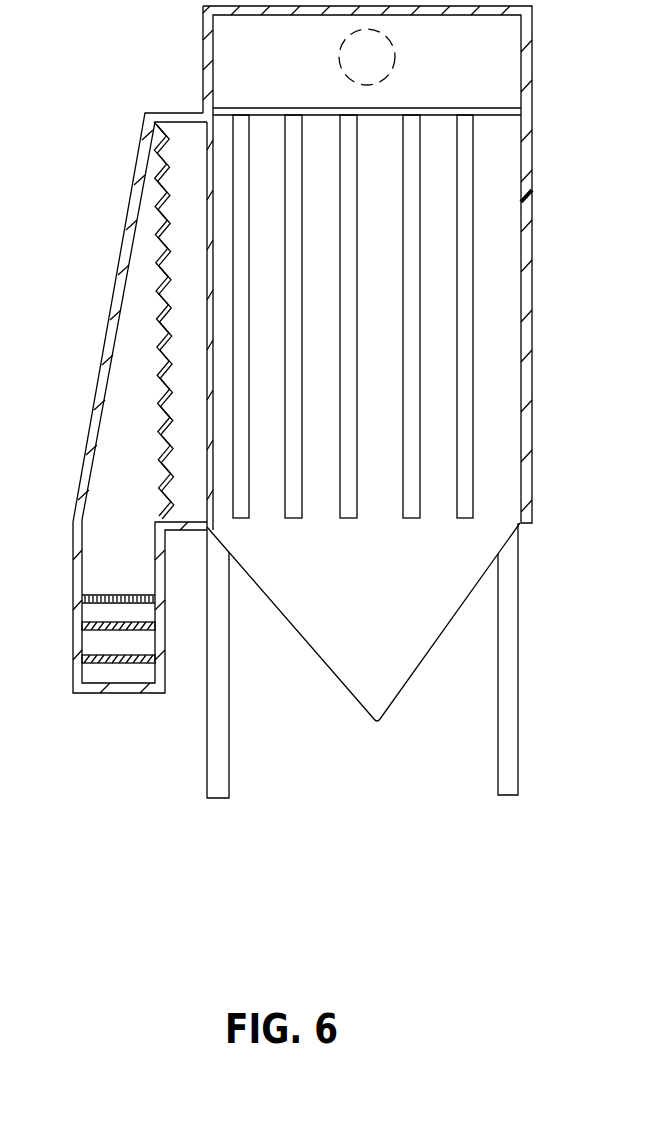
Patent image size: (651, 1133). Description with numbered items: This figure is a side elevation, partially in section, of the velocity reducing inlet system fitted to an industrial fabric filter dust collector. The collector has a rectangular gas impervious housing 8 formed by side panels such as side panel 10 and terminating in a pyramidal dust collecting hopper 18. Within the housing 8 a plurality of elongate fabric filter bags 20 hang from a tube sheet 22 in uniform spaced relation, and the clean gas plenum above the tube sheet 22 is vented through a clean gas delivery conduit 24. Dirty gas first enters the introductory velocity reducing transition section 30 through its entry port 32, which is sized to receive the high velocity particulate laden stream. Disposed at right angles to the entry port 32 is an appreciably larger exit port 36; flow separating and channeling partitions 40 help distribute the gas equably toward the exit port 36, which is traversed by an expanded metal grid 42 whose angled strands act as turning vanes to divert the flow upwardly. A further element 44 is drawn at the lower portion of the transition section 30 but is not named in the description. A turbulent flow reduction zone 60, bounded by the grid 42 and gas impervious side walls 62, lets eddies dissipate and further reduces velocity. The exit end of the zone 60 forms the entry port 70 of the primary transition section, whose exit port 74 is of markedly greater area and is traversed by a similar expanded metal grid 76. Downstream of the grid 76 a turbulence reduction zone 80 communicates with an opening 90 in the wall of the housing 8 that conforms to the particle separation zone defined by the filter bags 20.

The housing 8 is at (535, 200).
The side panel 10 is at (528, 282).
The dust collecting hopper 18 is at (362, 703).
The fabric filter bags 20 is at (473, 388).
The tube sheet 22 is at (494, 108).
The clean gas delivery conduit 24 is at (394, 46).
The introductory velocity reducing transition section 30 is at (70, 633).
The entry port 32 is at (124, 677).
The exit port 36 is at (97, 606).
The flow separating and channeling partitions 40 is at (143, 656).
The expanded metal grid 42 is at (125, 593).
The support 44 is at (98, 678).
The turbulent flow reduction zone 60 is at (96, 521).
The side walls 62 is at (73, 560).
The entry port 70 is at (93, 377).
The exit port 74 is at (178, 148).
The expanded metal grid 76 is at (170, 373).
The turbulence reduction zone 80 is at (172, 273).
The opening 90 is at (207, 307).